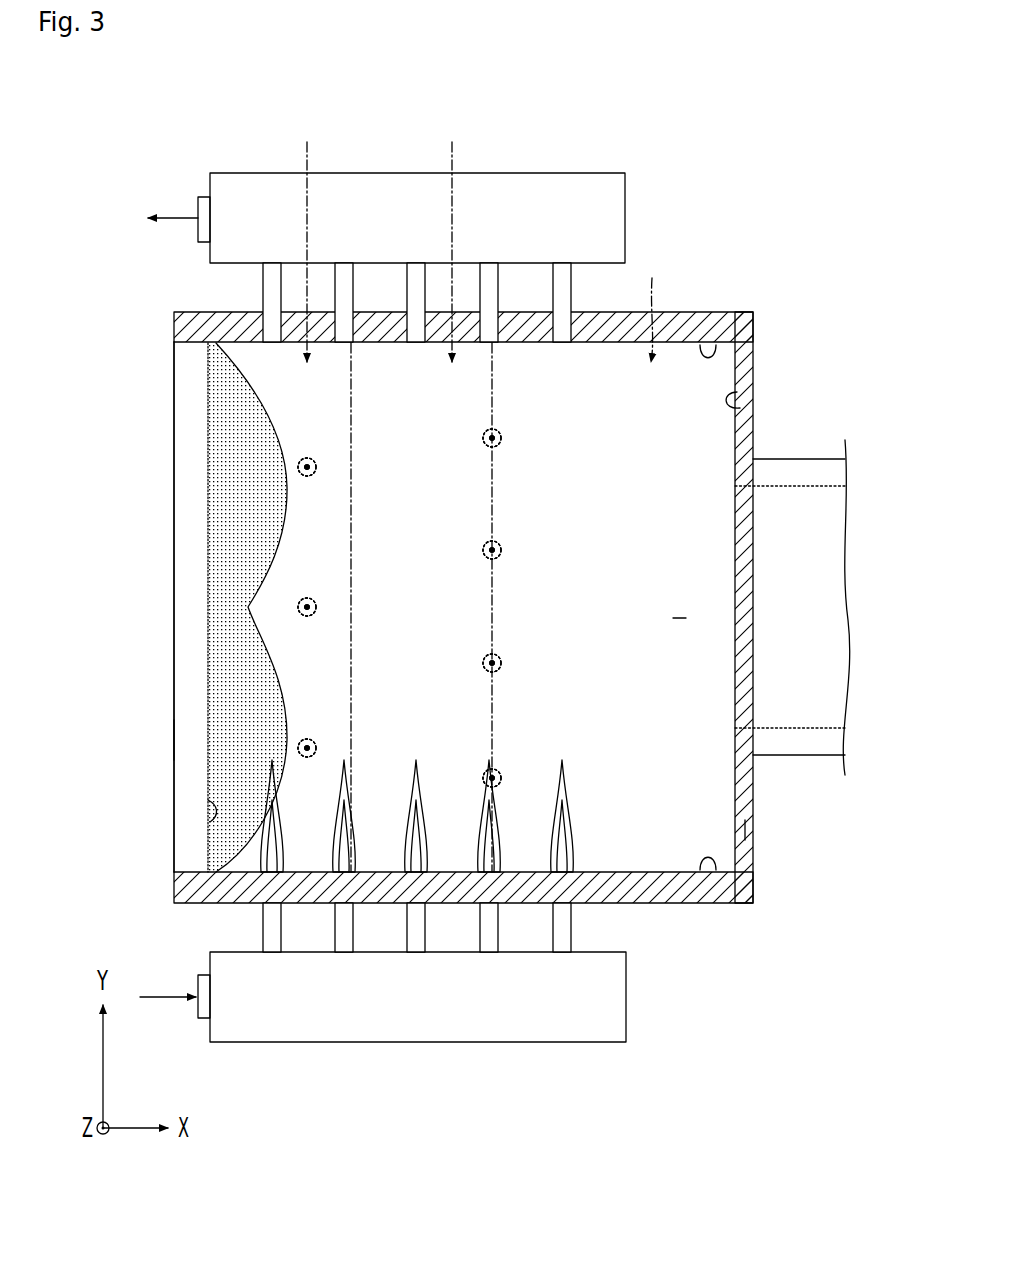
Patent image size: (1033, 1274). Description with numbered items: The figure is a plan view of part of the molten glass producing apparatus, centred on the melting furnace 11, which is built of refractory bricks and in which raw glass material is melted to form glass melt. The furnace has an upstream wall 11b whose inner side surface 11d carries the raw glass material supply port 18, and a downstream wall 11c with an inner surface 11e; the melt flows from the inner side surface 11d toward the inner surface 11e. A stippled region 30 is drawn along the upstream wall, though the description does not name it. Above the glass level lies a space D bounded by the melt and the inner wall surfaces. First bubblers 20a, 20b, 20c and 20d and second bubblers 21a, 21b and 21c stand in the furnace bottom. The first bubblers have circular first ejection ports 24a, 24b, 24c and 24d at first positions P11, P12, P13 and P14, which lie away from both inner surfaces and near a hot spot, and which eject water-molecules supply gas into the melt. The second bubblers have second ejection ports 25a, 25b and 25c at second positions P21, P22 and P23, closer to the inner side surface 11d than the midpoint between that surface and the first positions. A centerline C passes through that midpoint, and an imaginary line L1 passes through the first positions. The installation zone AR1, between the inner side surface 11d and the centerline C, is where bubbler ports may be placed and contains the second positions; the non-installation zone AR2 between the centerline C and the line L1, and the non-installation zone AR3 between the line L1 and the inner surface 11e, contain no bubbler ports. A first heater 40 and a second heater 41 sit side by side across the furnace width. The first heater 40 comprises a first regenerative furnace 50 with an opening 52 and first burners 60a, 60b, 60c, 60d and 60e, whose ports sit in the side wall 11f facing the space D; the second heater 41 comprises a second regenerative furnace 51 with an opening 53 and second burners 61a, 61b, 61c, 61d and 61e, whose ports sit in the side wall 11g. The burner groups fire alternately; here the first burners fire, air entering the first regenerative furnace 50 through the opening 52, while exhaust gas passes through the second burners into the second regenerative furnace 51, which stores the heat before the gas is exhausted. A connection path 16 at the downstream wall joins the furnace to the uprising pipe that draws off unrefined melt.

The melting furnace 11 is at (737, 306).
The upstream wall 11b is at (180, 740).
The downstream wall 11c is at (745, 835).
The inner side surface of the upstream wall 11d is at (212, 818).
The inner surface of the downstream wall 11e is at (732, 402).
The side wall 11f is at (708, 868).
The side wall 11g is at (708, 350).
The connection path 16 is at (800, 757).
The raw glass material supply port 18 is at (176, 606).
The glass melt 30 is at (216, 483).
The first heating system 40 is at (424, 1021).
The second heating system 41 is at (424, 188).
The first regenerative furnace 50 is at (626, 997).
The second regenerative furnace 51 is at (626, 218).
The opening 52 is at (198, 988).
The opening 53 is at (198, 215).
The first burner 60a is at (272, 955).
The first burner 60b is at (344, 955).
The first burner 60c is at (416, 955).
The first burner 60d is at (489, 955).
The first burner 60e is at (562, 955).
The second burner 61a is at (272, 268).
The second burner 61b is at (344, 268).
The second burner 61c is at (416, 268).
The second burner 61d is at (489, 268).
The second burner 61e is at (562, 268).
The first bubbler 20a is at (500, 762).
The first bubbler 20b is at (501, 655).
The first bubbler 20c is at (501, 542).
The first bubbler 20d is at (501, 430).
The second bubbler 21a is at (320, 738).
The second bubbler 21b is at (320, 598).
The second bubbler 21c is at (320, 458).
The first ejection port 24a is at (500, 777).
The first ejection port 24b is at (500, 668).
The first ejection port 24c is at (500, 555).
The first ejection port 24d is at (500, 443).
The second ejection port 25a is at (316, 750).
The second ejection port 25b is at (316, 609).
The second ejection port 25c is at (316, 469).
The first position P11 is at (484, 776).
The first position P12 is at (483, 663).
The first position P13 is at (483, 550).
The first position P14 is at (483, 438).
The second position P21 is at (308, 759).
The second position P22 is at (308, 618).
The second position P23 is at (308, 478).
The installation zone AR1 is at (308, 238).
The non-installation zone AR2 is at (452, 238).
The non-installation zone AR3 is at (653, 305).
The centerline C is at (352, 380).
The imaginary line L1 is at (493, 375).
The space D is at (679, 605).